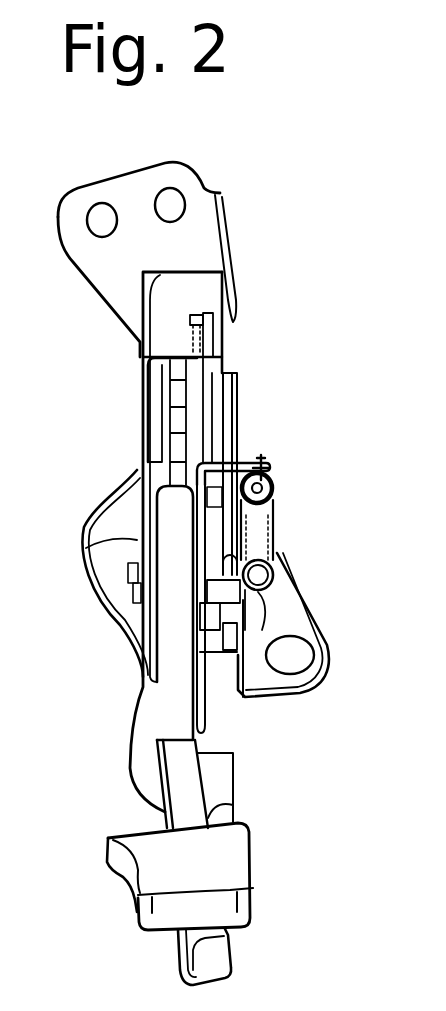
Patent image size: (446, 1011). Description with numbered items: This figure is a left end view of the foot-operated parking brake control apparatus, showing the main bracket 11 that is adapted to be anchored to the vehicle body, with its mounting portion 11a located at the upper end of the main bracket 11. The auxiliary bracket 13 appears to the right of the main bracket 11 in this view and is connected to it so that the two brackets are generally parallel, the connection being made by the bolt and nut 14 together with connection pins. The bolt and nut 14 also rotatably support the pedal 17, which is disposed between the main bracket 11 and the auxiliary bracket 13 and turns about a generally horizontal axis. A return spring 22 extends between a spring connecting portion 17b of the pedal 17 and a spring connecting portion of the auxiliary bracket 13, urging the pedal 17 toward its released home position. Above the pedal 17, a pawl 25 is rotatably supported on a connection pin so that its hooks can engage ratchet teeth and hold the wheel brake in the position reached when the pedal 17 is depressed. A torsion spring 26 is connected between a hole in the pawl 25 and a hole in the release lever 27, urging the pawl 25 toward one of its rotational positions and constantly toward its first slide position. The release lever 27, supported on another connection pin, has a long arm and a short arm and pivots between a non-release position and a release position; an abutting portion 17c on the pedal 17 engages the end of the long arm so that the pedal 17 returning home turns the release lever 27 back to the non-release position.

The main bracket 11 is at (143, 418).
The mounting portion 11a is at (204, 190).
The auxiliary bracket 13 is at (230, 412).
The bolt and nut 14 is at (140, 603).
The pedal 17 is at (193, 773).
The spring connecting portion 17b is at (270, 470).
The abutting portion 17c is at (240, 443).
The return spring 22 is at (275, 488).
The pawl 25 is at (177, 383).
The torsion spring 26 is at (203, 322).
The release lever 27 is at (217, 390).